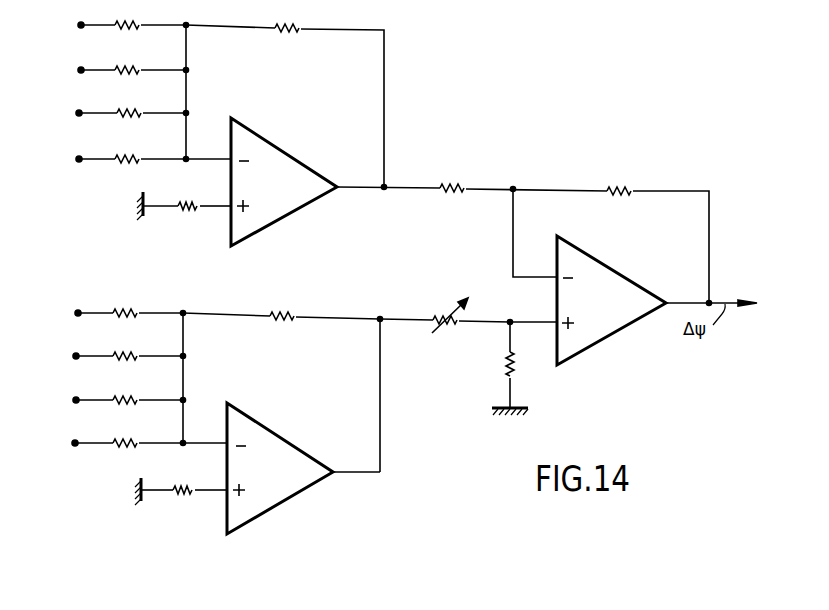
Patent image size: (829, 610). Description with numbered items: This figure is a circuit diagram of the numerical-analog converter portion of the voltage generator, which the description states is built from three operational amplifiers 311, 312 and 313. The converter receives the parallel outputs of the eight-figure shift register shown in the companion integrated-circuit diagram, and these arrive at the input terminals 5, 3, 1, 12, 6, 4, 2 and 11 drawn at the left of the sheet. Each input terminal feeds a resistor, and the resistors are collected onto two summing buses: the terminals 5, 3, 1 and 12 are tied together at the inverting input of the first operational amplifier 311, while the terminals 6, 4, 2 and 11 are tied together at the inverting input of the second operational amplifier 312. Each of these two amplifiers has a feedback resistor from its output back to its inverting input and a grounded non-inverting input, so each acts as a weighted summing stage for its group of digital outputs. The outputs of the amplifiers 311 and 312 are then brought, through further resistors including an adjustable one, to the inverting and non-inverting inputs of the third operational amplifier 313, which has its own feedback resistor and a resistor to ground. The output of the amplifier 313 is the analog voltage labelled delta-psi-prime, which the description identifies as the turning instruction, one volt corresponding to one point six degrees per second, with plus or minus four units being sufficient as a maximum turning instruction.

The input terminal 5 is at (123, 26).
The input terminal 3 is at (123, 71).
The input terminal 1 is at (122, 114).
The input terminal 12 is at (139, 160).
The input terminal 6 is at (120, 310).
The input terminal 4 is at (119, 355).
The input terminal 2 is at (119, 399).
The input terminal 11 is at (134, 442).
The operational amplifier 311 is at (284, 182).
The operational amplifier 312 is at (280, 468).
The operational amplifier 313 is at (611, 300).